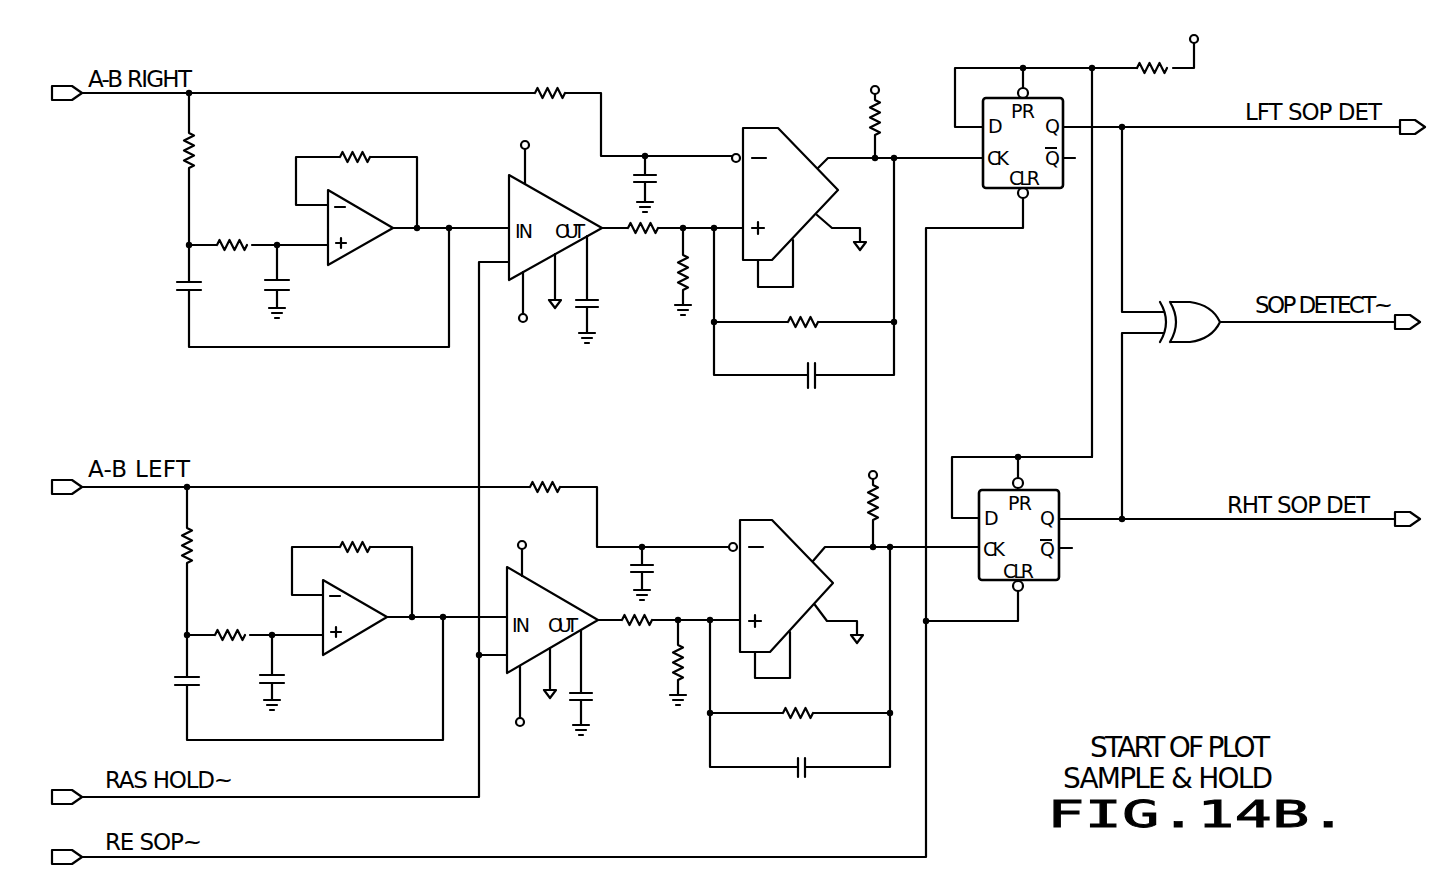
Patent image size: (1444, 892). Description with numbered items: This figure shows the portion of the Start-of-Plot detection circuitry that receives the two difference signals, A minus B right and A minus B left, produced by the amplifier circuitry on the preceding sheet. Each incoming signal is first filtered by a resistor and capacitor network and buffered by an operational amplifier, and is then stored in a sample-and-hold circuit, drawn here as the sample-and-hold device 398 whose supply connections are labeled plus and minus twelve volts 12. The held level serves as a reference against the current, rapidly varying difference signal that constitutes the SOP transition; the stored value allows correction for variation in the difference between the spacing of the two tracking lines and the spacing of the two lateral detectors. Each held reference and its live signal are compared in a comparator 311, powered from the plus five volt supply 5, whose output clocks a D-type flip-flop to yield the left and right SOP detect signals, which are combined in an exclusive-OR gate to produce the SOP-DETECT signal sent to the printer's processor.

The LM311 comparator 311 is at (783, 372).
The LF398 sample and hold amplifier 398 is at (556, 422).
The 12 volt supply 12 is at (524, 432).
The 5 volt supply 5 is at (1036, 276).